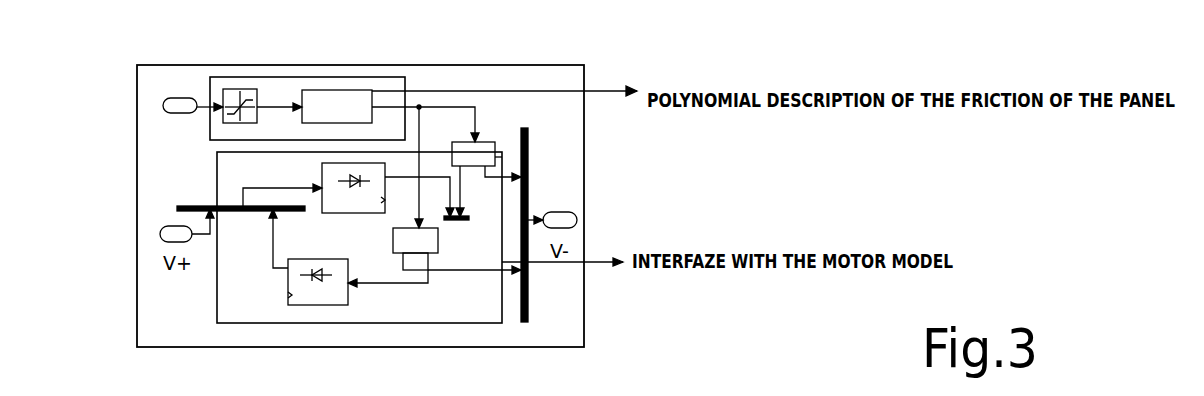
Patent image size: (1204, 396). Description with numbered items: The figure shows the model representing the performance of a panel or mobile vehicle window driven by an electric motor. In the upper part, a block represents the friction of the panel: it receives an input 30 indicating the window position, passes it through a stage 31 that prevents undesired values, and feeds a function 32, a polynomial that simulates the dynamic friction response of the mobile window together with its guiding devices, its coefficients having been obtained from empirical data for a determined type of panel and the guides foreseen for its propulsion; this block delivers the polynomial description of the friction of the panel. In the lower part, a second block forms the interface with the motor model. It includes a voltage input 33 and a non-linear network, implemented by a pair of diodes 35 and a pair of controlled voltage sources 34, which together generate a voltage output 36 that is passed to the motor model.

The input 30 is at (164, 113).
The stage 31 is at (248, 89).
The function 32 is at (346, 90).
The voltage input 33 is at (163, 242).
The controlled voltage source 34 is at (437, 253).
The diode 35 is at (312, 305).
The voltage output 36 is at (577, 212).